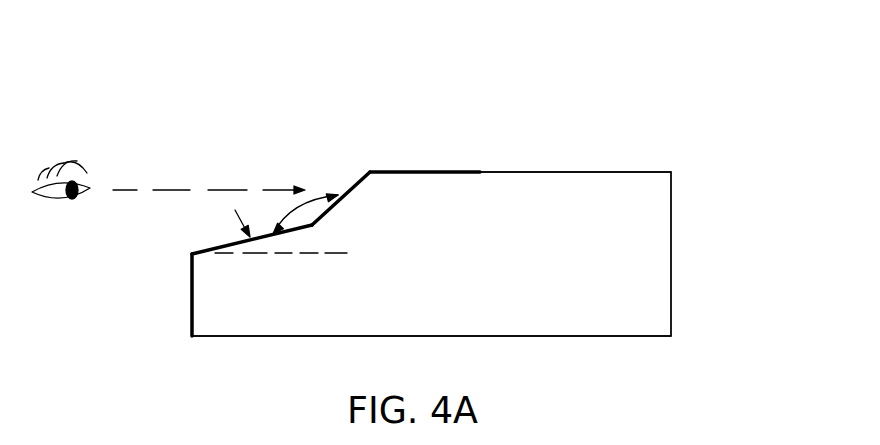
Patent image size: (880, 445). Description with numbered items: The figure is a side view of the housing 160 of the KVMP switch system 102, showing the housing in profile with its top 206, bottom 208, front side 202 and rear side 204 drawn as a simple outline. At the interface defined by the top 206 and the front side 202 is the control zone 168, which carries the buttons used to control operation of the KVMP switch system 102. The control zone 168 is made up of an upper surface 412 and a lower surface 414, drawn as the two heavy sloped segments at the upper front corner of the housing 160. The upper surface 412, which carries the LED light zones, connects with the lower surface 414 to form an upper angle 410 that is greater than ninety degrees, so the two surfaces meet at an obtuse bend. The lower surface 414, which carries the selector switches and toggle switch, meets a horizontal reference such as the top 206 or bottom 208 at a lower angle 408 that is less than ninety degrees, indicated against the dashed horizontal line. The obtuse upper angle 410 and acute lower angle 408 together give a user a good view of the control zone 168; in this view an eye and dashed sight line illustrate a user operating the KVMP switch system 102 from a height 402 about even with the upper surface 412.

The KVMP switch system 102 is at (556, 108).
The housing 160 is at (563, 262).
The control zone 168 is at (319, 165).
The front side 202 is at (180, 287).
The rear side 204 is at (672, 253).
The top 206 is at (541, 171).
The bottom 208 is at (528, 340).
The height 402 is at (218, 190).
The lower angle 408 is at (238, 298).
The upper angle 410 is at (300, 205).
The upper surface 412 is at (356, 183).
The lower surface 414 is at (222, 246).